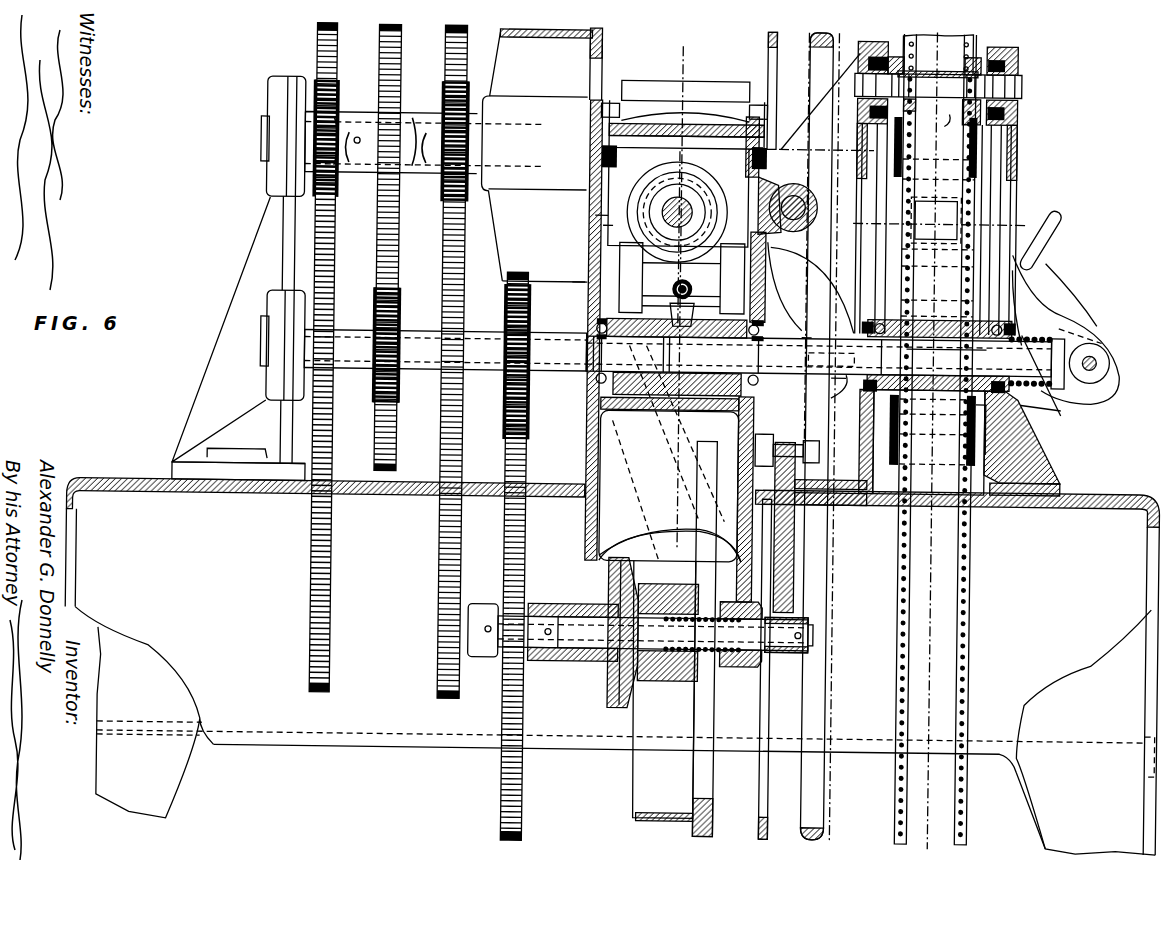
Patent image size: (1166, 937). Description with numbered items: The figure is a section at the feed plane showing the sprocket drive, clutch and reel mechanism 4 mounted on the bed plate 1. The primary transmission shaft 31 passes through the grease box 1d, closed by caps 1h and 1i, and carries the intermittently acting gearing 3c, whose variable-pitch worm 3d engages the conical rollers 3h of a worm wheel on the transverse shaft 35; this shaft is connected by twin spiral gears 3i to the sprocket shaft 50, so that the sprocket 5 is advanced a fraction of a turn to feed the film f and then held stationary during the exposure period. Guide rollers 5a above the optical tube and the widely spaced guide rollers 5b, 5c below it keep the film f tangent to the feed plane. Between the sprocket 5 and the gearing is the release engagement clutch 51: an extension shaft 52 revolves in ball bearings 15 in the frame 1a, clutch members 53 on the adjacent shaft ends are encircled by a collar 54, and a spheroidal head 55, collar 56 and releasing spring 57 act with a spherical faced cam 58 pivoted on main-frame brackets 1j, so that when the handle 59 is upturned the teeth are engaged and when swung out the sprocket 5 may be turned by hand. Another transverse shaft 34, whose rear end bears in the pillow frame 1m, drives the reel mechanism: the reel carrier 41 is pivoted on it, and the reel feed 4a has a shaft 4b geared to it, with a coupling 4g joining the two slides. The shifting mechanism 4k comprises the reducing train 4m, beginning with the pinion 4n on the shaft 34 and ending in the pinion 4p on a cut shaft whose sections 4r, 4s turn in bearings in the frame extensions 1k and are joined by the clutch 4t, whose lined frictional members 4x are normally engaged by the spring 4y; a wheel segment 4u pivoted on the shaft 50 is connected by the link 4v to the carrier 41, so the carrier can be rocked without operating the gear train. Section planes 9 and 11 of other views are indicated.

The bed plate 1 is at (556, 487).
The frame 1a is at (604, 420).
The grease box 1d is at (640, 210).
The cap 1h is at (684, 173).
The cap 1i is at (686, 91).
The main-frame brackets 1j is at (1112, 360).
The main frame extensions 1k is at (690, 512).
The pillow frame 1m is at (270, 405).
The intermittently acting gearing 3c is at (715, 195).
The variable-pitch worm 3d is at (615, 222).
The conical rollers 3h is at (682, 278).
The twin spiral gears 3i is at (672, 316).
The primary transmission shaft 31 is at (660, 200).
The transverse shaft 34 is at (263, 143).
The transverse shaft 35 is at (590, 278).
The reel mechanism 4 is at (775, 30).
The reel feed 4a is at (720, 639).
The reel-feed shaft 4b is at (815, 782).
The coupling 4g is at (766, 78).
The shifting mechanism 4k is at (601, 364).
The reducing train 4m is at (373, 247).
The pinion 4n is at (335, 100).
The pinion 4p is at (812, 650).
The shaft section 4r is at (548, 615).
The shaft section 4s is at (805, 632).
The clutch 4t is at (662, 604).
The wheel segment 4u is at (795, 530).
The link 4v is at (758, 455).
The frictional members 4x is at (612, 700).
The spring 4y is at (680, 650).
The reel carrier 41 is at (588, 425).
The sprocket 5 is at (880, 28).
The guide rollers 5a is at (938, 127).
The guide roller 5b is at (990, 310).
The guide roller 5c is at (975, 425).
The sprocket shaft 50 is at (263, 338).
The release engagement clutch 51 is at (838, 365).
The extension shaft 52 is at (940, 365).
The clutch members 53 is at (826, 407).
The collar 54 is at (812, 333).
The spheroidal head 55 is at (1100, 375).
The collar 56 is at (1010, 395).
The releasing spring 57 is at (1050, 340).
The spherical faced cam 58 is at (1095, 340).
The handle 59 is at (1030, 245).
The section plane 9- 9 is at (640, 51).
The section plane 11- 11 is at (861, 233).
The ball bearings 15 is at (845, 282).
The film f is at (965, 588).